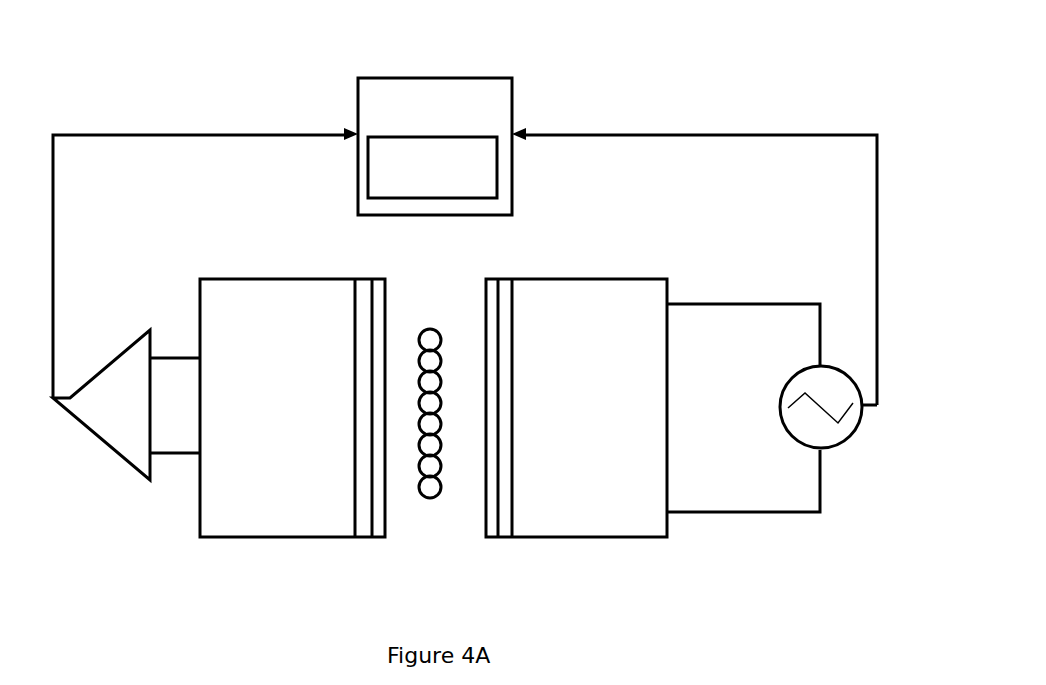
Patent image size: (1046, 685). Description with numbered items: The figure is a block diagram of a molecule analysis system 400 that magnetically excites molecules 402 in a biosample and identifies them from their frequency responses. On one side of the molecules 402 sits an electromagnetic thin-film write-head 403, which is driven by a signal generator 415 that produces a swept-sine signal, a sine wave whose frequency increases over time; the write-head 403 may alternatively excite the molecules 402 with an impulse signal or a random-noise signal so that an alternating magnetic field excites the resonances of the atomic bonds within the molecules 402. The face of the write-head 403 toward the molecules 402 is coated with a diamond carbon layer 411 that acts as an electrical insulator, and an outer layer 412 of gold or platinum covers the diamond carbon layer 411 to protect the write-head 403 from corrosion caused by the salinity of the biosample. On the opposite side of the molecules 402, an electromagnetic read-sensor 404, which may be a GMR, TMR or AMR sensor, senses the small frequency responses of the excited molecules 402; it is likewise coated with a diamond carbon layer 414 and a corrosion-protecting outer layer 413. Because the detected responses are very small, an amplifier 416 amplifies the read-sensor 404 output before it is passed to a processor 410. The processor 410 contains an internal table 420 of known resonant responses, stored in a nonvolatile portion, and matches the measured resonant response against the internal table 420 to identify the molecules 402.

The molecule analysis system 400 is at (730, 66).
The processor 410 is at (492, 100).
The internal table 420 is at (490, 187).
The molecules 402 is at (430, 322).
The electromagnetic thin-film write-head 403 is at (593, 513).
The electromagnetic read-sensor 404 is at (257, 493).
The diamond carbon layer 411 is at (512, 538).
The outer layer 412 is at (484, 538).
The outer layer 413 is at (385, 538).
The diamond carbon layer 414 is at (357, 538).
The signal generator 415 is at (823, 435).
The amplifier 416 is at (117, 420).